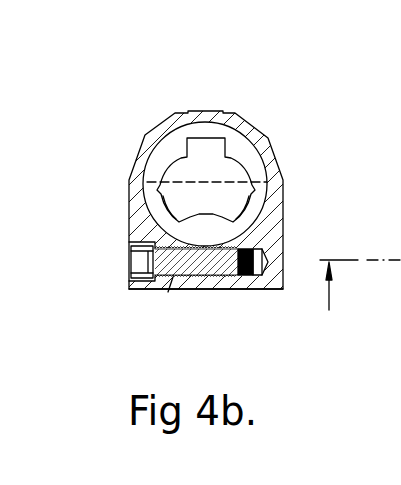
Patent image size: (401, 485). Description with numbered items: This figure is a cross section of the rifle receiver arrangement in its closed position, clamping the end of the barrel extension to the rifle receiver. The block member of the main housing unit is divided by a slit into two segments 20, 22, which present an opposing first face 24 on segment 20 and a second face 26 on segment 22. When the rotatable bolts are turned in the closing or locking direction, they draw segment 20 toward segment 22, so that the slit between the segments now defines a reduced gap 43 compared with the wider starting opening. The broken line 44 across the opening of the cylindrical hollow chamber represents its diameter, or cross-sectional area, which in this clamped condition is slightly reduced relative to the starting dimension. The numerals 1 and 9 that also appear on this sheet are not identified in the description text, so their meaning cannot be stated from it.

The clamping device 1 is at (172, 291).
The base 9 is at (206, 338).
The segment 20 is at (162, 282).
The segment 22 is at (218, 290).
The first face 24 is at (183, 246).
The second face 26 is at (241, 259).
The reduced gap 43 is at (169, 291).
The diameter 44 is at (205, 182).